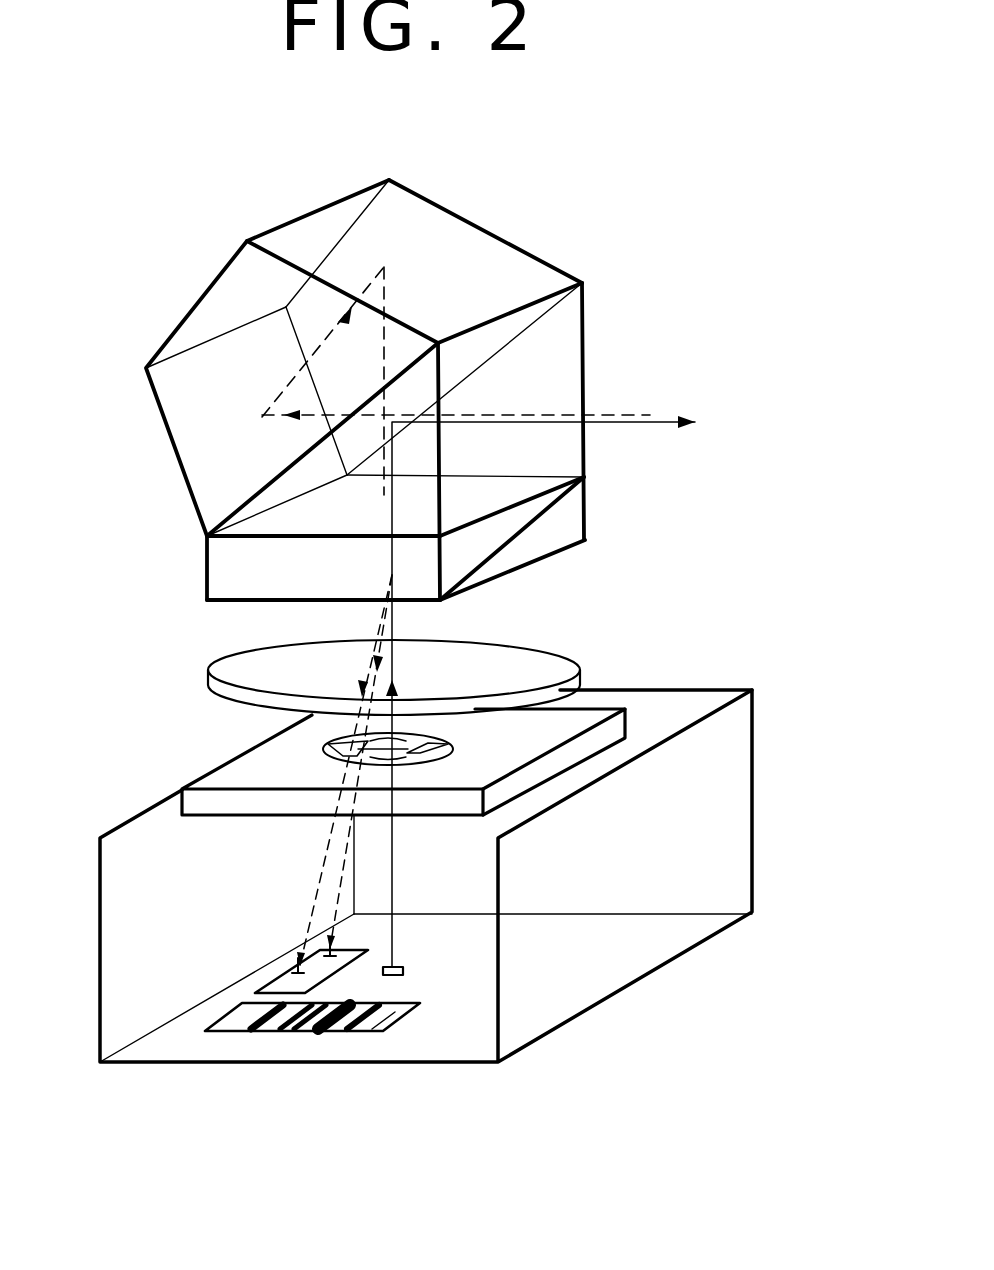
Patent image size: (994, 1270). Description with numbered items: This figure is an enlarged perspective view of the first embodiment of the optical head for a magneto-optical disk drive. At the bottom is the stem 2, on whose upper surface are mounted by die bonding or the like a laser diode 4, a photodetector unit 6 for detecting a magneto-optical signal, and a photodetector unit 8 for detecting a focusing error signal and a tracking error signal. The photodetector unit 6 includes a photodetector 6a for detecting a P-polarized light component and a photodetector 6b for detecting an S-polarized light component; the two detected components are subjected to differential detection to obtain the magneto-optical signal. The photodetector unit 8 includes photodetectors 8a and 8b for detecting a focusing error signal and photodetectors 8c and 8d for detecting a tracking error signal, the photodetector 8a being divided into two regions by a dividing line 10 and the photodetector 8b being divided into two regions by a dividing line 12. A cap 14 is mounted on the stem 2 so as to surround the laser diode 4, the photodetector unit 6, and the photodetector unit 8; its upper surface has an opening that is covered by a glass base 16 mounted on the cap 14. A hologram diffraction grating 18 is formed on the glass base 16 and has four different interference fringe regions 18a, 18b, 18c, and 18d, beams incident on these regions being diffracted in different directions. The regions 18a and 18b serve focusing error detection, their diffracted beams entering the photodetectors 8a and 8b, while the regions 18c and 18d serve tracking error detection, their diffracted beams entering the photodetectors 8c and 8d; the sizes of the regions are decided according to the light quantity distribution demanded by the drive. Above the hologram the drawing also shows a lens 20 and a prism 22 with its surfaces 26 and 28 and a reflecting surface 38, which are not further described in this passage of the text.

The stem 2 is at (507, 1122).
The laser diode 4 is at (405, 969).
The photodetector unit 6 is at (280, 962).
The photodetector 6a is at (318, 945).
The photodetector 6b is at (290, 978).
The photodetector unit 8 is at (218, 1015).
The photodetector 8a is at (288, 1030).
The photodetector 8b is at (315, 1030).
The photodetector 8c is at (230, 1030).
The photodetector 8d is at (388, 1020).
The dividing line 10 is at (275, 1030).
The dividing line 12 is at (333, 1030).
The cap 14 is at (743, 738).
The glass base 16 is at (598, 715).
The hologram diffraction grating 18 is at (322, 766).
The interference fringe region 18a is at (325, 743).
The interference fringe region 18b is at (452, 748).
The interference fringe region 18c is at (410, 735).
The interference fringe region 18d is at (395, 760).
The collimator lens 20 is at (545, 657).
The prism 22 is at (593, 291).
The prism surface 26 is at (585, 353).
The prism reflecting surface 28 is at (493, 232).
The reflecting surface 38 is at (582, 508).